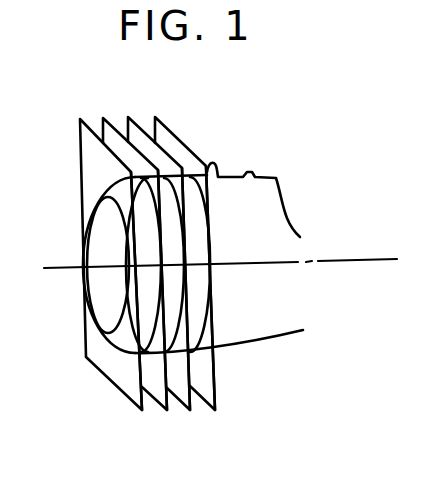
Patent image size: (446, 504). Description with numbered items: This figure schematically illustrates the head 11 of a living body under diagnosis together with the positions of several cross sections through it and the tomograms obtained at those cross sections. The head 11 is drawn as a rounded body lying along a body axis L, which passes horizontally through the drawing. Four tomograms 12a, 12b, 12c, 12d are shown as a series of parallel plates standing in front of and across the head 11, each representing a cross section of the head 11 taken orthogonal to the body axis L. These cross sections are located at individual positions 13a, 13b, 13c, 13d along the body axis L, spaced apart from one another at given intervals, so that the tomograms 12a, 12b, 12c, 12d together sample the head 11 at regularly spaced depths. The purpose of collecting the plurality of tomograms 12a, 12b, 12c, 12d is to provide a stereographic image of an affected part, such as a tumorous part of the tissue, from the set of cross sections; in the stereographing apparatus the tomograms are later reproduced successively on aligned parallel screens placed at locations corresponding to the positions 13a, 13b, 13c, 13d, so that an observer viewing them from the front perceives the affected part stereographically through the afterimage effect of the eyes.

The head 11 is at (263, 325).
The body axis L is at (357, 260).
The tomogram 12a is at (77, 133).
The tomogram 12b is at (106, 128).
The tomogram 12c is at (131, 128).
The tomogram 12d is at (167, 135).
The cross section position 13a is at (142, 410).
The cross section position 13b is at (167, 410).
The cross section position 13c is at (190, 410).
The cross section position 13d is at (215, 410).